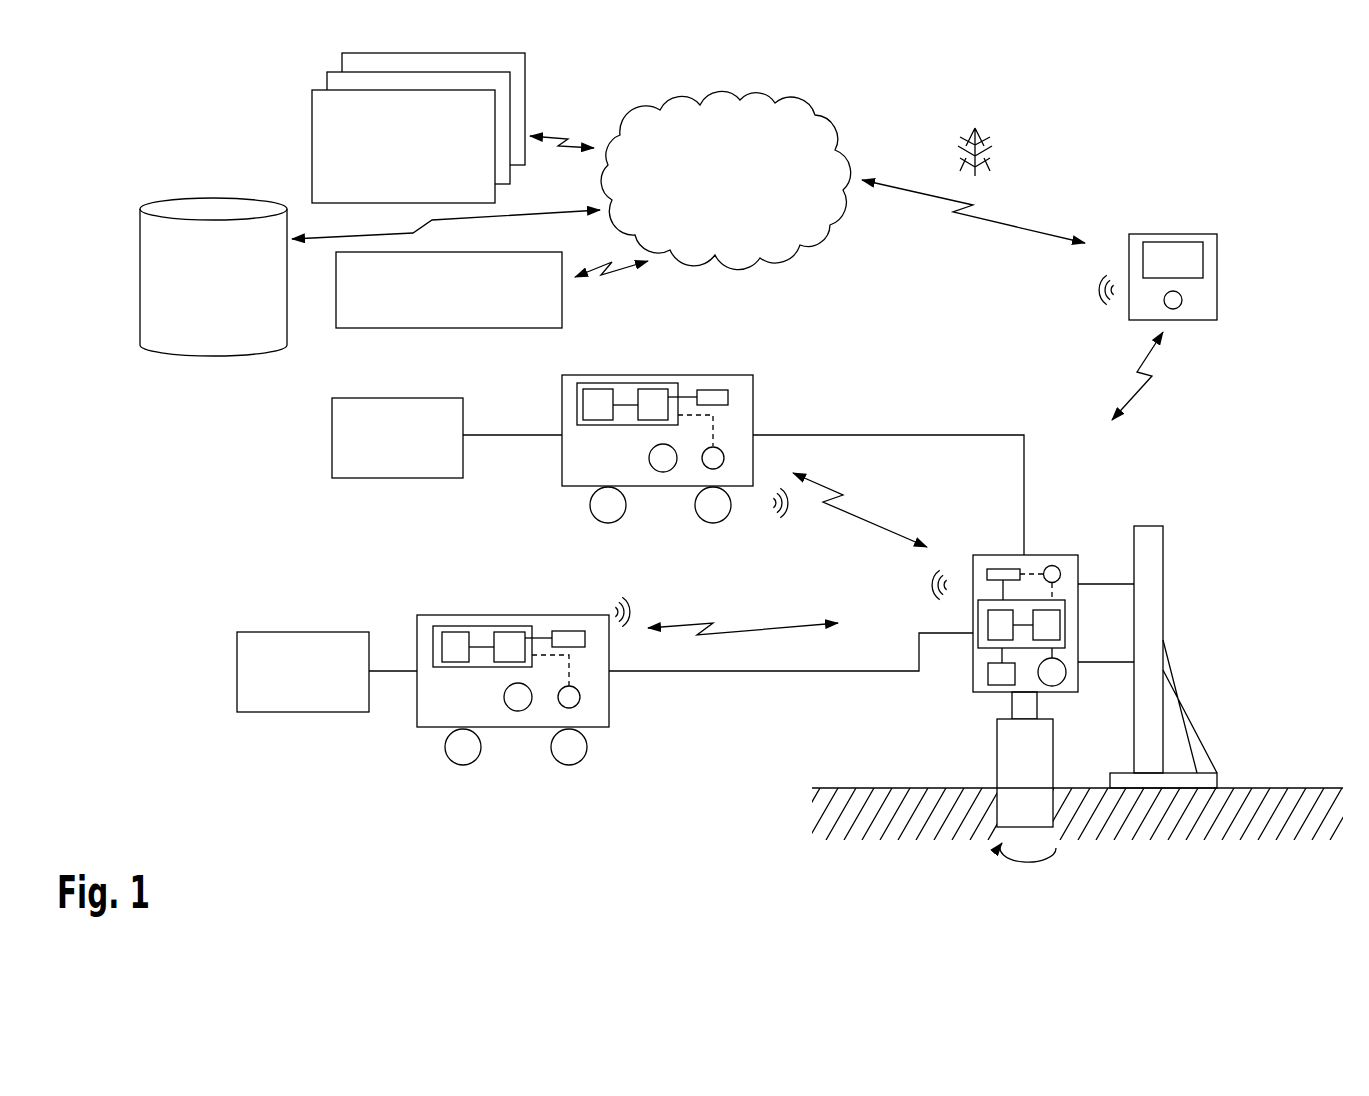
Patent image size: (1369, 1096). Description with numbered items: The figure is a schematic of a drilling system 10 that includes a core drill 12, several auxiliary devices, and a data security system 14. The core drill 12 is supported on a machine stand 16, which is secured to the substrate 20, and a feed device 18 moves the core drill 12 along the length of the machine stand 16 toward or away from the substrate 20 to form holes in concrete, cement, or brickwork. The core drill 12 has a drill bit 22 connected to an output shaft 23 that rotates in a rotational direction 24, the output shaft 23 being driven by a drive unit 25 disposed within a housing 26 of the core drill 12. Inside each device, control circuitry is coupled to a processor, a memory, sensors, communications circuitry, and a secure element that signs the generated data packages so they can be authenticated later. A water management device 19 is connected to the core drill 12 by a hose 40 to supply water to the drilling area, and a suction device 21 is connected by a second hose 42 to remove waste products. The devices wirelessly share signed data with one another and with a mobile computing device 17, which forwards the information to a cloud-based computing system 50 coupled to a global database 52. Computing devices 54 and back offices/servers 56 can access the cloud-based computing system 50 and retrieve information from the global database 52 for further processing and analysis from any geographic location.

The drilling system 10 is at (535, 855).
The core drill 12 is at (1053, 693).
The data security system 14 is at (1122, 172).
The machine stand 16 is at (1165, 553).
The mobile computing device 17 is at (1208, 234).
The feed device 18 is at (1053, 607).
The water management device 19 is at (458, 676).
The substrate 20 is at (1255, 788).
The suction device 21 is at (560, 434).
The drill bit 22 is at (1042, 818).
The output shaft 23 is at (1028, 705).
The rotational direction 24 is at (1022, 873).
The drive unit 25 is at (1003, 690).
The housing 26 is at (1035, 555).
The hose 40 is at (700, 672).
The second hose 42 is at (903, 433).
The cloud-based computing system 50 is at (762, 100).
The global database 52 is at (188, 207).
The computing devices 54 is at (546, 61).
The back offices/servers 56 is at (492, 328).